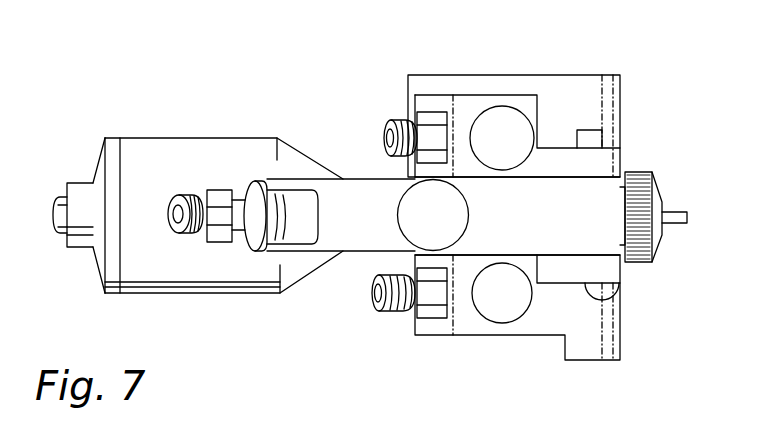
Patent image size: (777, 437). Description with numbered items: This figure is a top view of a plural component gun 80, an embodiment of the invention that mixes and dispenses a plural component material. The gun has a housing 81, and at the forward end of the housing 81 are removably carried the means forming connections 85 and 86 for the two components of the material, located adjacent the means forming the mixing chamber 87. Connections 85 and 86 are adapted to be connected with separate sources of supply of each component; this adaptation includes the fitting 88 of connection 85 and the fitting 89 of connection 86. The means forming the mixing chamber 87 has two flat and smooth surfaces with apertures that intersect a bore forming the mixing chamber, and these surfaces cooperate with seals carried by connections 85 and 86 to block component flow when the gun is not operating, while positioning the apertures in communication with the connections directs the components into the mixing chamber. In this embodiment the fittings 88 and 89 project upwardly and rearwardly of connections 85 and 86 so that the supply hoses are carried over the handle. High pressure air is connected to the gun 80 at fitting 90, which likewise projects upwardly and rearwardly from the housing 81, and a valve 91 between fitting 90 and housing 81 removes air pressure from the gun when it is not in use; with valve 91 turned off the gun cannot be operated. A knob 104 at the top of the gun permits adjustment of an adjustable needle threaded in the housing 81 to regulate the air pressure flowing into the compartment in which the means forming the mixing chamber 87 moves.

The plural component gun 80 is at (128, 54).
The housing 81 is at (608, 178).
The connection 85 is at (607, 148).
The connection 86 is at (632, 298).
The means forming the mixing chamber 87 is at (675, 210).
The fitting 88 is at (386, 142).
The fitting 89 is at (372, 305).
The fitting 90 is at (190, 190).
The valve 91 is at (258, 182).
The knob 104 is at (398, 231).